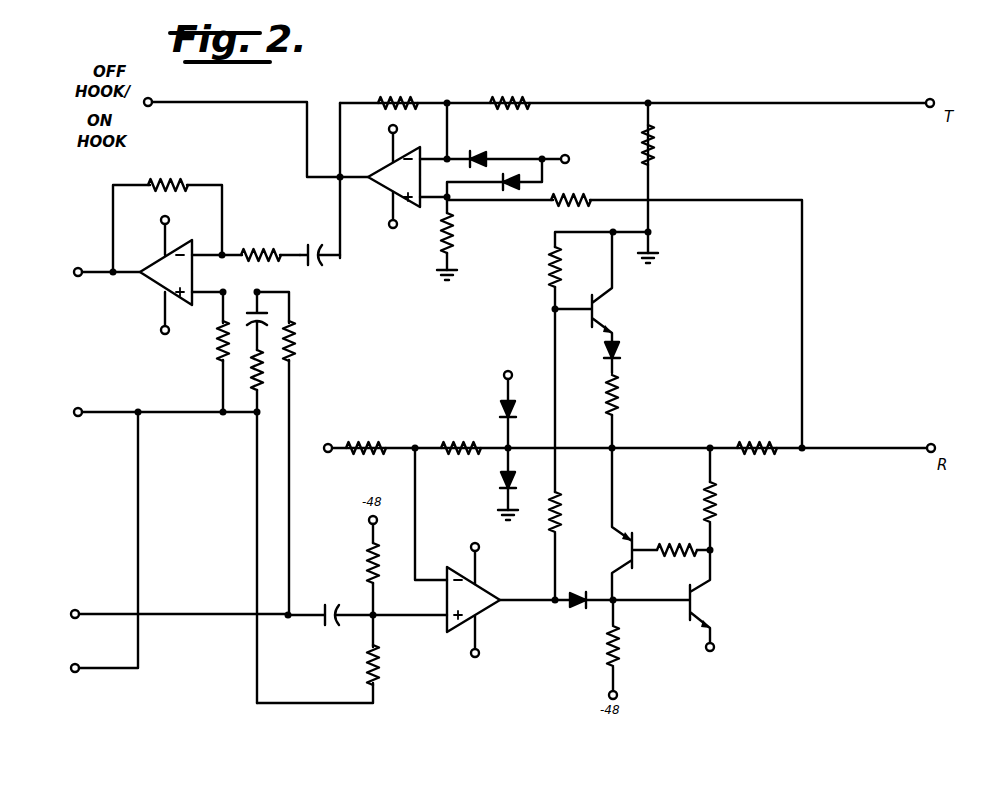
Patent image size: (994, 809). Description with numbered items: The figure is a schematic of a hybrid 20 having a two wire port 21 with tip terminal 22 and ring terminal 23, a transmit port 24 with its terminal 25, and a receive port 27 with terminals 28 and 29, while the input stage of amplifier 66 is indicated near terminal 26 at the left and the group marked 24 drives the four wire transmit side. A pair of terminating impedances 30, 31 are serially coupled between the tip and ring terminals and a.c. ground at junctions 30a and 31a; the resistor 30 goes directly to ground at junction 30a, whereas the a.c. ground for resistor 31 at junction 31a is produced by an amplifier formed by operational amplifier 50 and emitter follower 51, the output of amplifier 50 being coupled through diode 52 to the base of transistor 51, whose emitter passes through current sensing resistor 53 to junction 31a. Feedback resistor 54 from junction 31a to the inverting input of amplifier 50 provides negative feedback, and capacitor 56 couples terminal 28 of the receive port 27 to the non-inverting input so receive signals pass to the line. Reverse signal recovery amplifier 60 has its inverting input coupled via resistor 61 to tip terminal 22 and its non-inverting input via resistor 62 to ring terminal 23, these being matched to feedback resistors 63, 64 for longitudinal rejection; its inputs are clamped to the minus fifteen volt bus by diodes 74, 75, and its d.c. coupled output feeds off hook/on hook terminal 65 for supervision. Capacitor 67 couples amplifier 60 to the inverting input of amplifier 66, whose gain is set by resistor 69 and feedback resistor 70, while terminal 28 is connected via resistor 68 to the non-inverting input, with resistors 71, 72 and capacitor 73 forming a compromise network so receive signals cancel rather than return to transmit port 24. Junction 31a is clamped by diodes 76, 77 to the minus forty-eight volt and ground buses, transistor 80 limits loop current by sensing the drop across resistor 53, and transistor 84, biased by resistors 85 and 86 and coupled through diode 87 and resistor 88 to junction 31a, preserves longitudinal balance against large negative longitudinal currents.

The hybrid 20 is at (540, 92).
The two wire port 21 is at (874, 282).
The tip terminal 22 is at (926, 110).
The ring terminal 23 is at (928, 445).
The transmit port 24 is at (94, 372).
The output terminal 25 is at (78, 276).
The input terminal 26 is at (78, 418).
The receive port 27 is at (92, 655).
The terminal of the receive port 28 is at (76, 609).
The terminal 29 is at (75, 672).
The terminating impedance (resistor) 30 is at (658, 142).
The a.c. ground junction 30a is at (655, 235).
The terminating impedance (resistor) 31 is at (762, 456).
The a.c. ground junction 31a is at (711, 442).
The operational amplifier 50 is at (447, 630).
The emitter follower transistor 51 is at (685, 614).
The diode 52 is at (572, 610).
The current sensing resistor 53 is at (720, 506).
The feedback resistor 54 is at (455, 442).
The capacitor 56 is at (328, 630).
The reverse signal recovery amplifier 60 is at (392, 186).
The resistor 61 is at (518, 96).
The resistor 62 is at (578, 196).
The feedback resistor 63 is at (406, 96).
The feedback resistor 64 is at (454, 238).
The off hook/on hook terminal 65 is at (152, 100).
The amplifier 66 is at (143, 278).
The capacitor 67 is at (315, 245).
The resistor 68 is at (294, 343).
The resistor 69 is at (258, 247).
The feedback resistor 70 is at (170, 182).
The resistor 71 is at (215, 350).
The resistor 72 is at (250, 373).
The capacitor 73 is at (268, 318).
The diode 74 is at (486, 152).
The diode 75 is at (513, 196).
The diode 76 is at (503, 399).
The diode 77 is at (502, 479).
The transistor 80 is at (636, 546).
The transistor 84 is at (612, 306).
The resistor 85 is at (561, 505).
The resistor 86 is at (544, 281).
The diode 87 is at (622, 352).
The resistor 88 is at (622, 386).